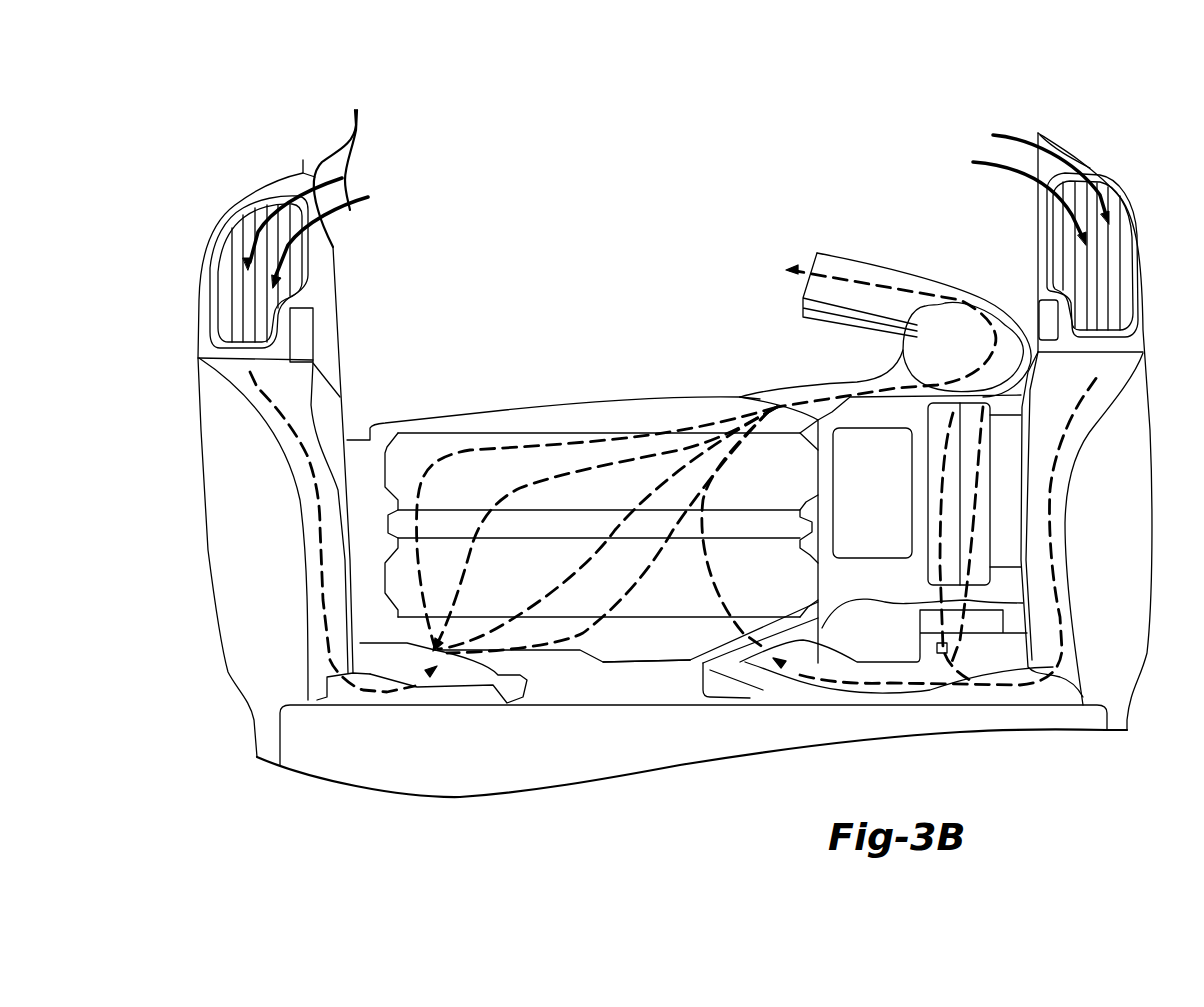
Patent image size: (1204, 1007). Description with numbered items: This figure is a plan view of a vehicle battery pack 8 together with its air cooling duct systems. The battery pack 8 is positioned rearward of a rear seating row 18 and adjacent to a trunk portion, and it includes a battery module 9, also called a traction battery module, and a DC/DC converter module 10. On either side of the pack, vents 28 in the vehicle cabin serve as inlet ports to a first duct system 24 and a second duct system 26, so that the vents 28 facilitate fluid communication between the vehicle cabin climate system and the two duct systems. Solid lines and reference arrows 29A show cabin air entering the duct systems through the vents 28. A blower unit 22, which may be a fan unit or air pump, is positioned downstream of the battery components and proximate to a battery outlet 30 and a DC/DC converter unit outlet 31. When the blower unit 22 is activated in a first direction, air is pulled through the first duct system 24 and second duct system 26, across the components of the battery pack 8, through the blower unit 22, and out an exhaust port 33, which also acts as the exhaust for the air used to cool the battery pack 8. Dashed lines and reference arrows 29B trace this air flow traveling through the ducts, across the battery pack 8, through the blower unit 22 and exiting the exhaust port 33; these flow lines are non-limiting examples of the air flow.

The battery pack 8 is at (634, 645).
The battery module 9 is at (507, 418).
The DC/DC converter module 10 is at (898, 583).
The rear seating row 18 is at (486, 797).
The blower unit 22 is at (943, 323).
The first duct system 24 is at (300, 523).
The second duct system 26 is at (1075, 566).
The vents 28 is at (230, 287).
The reference arrows showing air flow entering duct systems 29A is at (983, 162).
The reference arrows showing air flow through duct systems 29B is at (705, 422).
The battery outlet 30 is at (760, 397).
The DC/DC converter unit outlet 31 is at (955, 410).
The exhaust port 33 is at (785, 269).